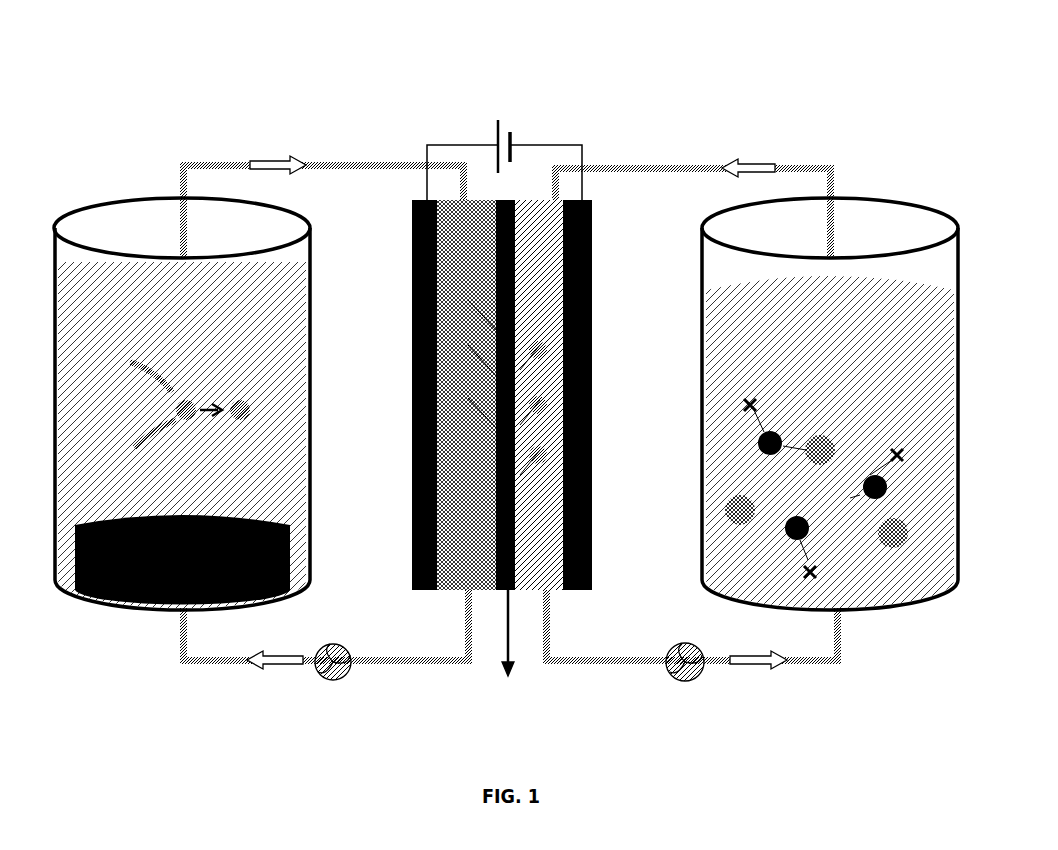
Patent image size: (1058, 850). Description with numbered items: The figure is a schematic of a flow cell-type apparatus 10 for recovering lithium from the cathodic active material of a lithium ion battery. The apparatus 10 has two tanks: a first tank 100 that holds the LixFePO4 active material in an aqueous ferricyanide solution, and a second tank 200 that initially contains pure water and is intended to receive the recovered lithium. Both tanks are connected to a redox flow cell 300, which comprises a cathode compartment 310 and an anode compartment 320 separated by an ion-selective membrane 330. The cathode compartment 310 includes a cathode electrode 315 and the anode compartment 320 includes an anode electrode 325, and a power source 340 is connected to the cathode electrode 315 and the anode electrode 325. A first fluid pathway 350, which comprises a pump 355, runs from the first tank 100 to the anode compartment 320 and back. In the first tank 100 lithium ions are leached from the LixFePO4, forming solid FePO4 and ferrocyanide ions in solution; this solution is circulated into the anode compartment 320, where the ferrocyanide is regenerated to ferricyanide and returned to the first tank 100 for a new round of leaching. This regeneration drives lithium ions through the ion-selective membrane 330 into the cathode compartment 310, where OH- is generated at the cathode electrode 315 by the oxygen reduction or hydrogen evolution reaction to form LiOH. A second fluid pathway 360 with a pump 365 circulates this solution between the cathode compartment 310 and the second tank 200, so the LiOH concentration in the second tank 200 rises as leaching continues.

The apparatus 10 is at (500, 367).
The first tank 100 is at (182, 380).
The second tank 200 is at (830, 382).
The redox flow cell 300 is at (500, 443).
The cathode compartment 310 is at (539, 395).
The cathode electrode 315 is at (601, 249).
The anode compartment 320 is at (467, 395).
The anode electrode 325 is at (407, 247).
The ion-selective membrane 330 is at (497, 462).
The power source 340 is at (504, 136).
The first fluid pathway 350 is at (326, 418).
The pump 355 is at (340, 643).
The second fluid pathway 360 is at (692, 418).
The pump 365 is at (681, 644).